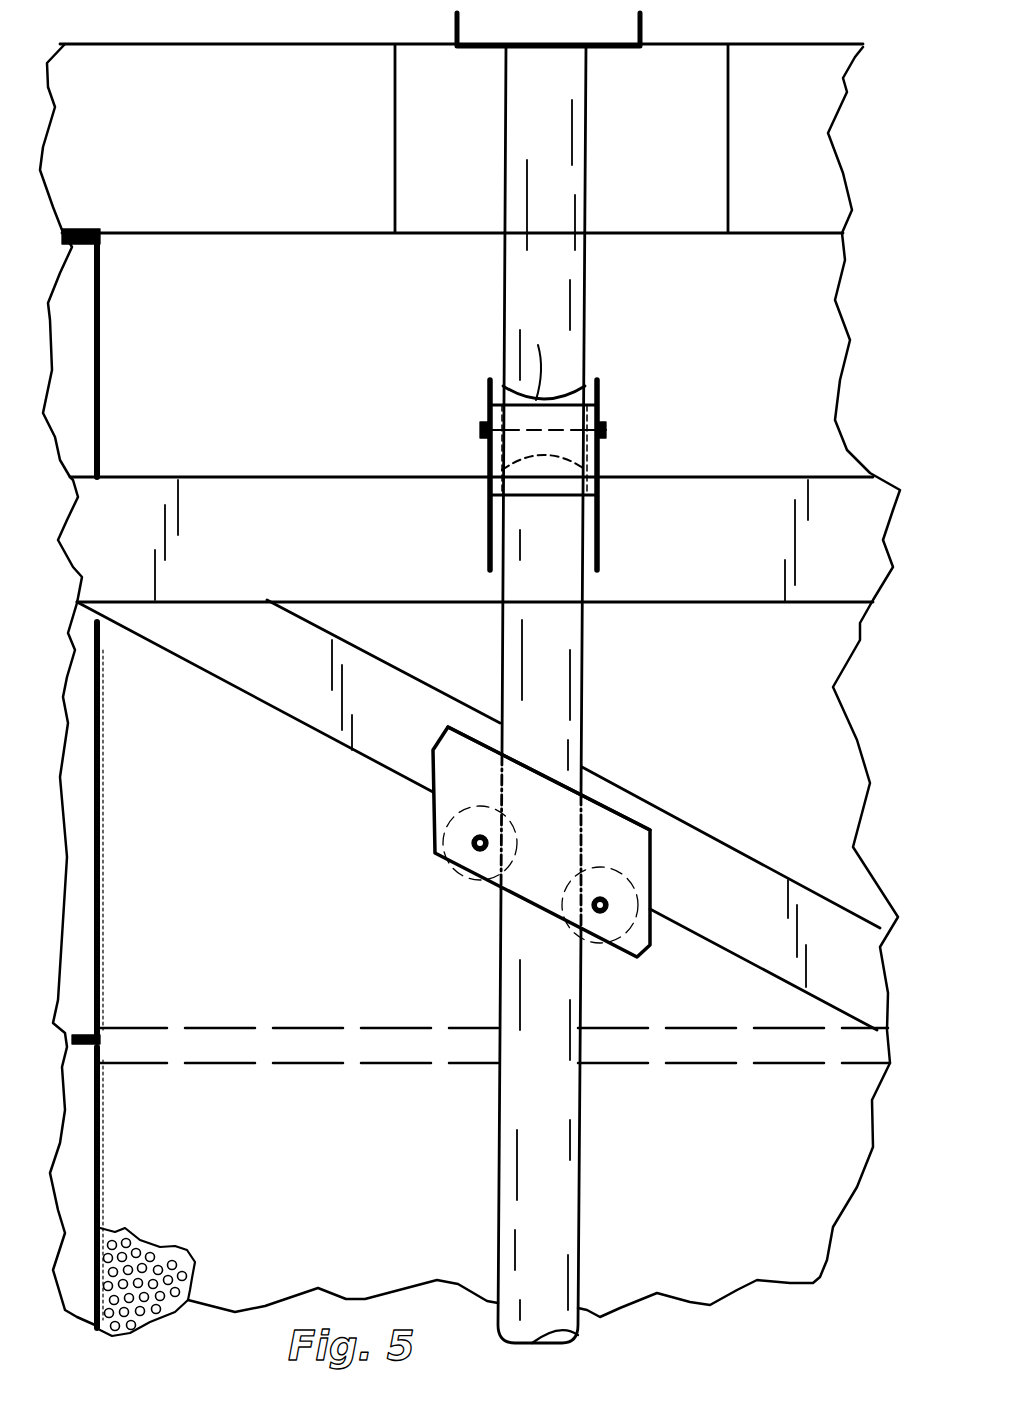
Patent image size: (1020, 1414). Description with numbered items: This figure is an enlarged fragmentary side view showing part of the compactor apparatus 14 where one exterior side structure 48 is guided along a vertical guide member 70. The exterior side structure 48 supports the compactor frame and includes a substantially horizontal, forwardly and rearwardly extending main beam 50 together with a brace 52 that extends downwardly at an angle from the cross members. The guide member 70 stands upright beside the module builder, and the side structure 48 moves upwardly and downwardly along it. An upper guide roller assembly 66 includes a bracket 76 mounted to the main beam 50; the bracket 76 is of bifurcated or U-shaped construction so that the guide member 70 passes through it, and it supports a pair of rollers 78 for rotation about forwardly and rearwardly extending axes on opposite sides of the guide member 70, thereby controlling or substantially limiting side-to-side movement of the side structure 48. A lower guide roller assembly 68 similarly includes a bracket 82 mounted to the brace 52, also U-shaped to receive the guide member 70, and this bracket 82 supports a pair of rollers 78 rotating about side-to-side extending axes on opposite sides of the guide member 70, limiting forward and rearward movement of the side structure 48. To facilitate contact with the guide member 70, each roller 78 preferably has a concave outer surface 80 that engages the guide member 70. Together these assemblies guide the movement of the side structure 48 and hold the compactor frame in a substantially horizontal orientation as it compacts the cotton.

The compactor apparatus 14 is at (279, 866).
The exterior side structure 48 is at (150, 477).
The main beam 50 is at (296, 477).
The brace 52 is at (720, 838).
The upper guide roller assembly 66 is at (490, 405).
The lower guide roller assembly 68 is at (428, 847).
The guide member 70 is at (587, 315).
The bracket 76 is at (600, 548).
The roller 78 is at (533, 455).
The concave outer surface 80 is at (685, 878).
The bracket 82 is at (618, 812).